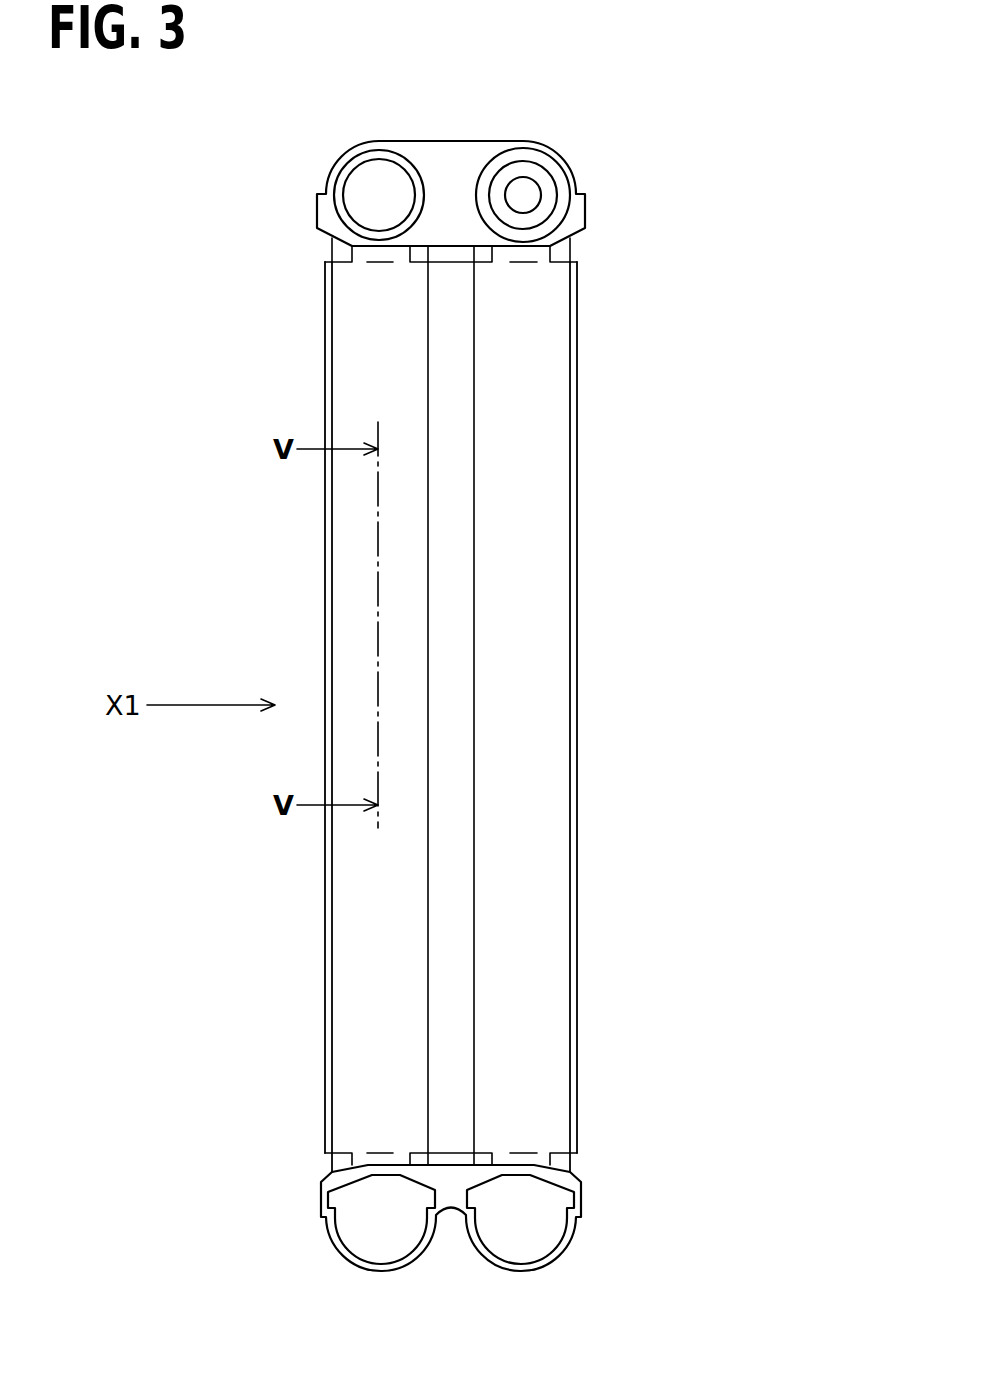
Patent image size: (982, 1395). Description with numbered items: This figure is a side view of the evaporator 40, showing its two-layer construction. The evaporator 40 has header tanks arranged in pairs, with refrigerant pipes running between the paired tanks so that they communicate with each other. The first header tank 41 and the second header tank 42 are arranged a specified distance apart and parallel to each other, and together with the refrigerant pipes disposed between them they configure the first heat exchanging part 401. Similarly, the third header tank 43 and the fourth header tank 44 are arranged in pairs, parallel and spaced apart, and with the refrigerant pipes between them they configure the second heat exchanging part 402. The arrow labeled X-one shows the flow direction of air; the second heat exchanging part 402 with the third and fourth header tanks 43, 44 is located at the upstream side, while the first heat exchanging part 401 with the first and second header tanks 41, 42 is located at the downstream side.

The evaporator 40 is at (454, 685).
The first header tank 41 is at (523, 148).
The second header tank 42 is at (558, 1255).
The third header tank 43 is at (406, 156).
The fourth header tank 44 is at (422, 1252).
The first heat exchanging part 401 is at (609, 592).
The second heat exchanging part 402 is at (294, 592).